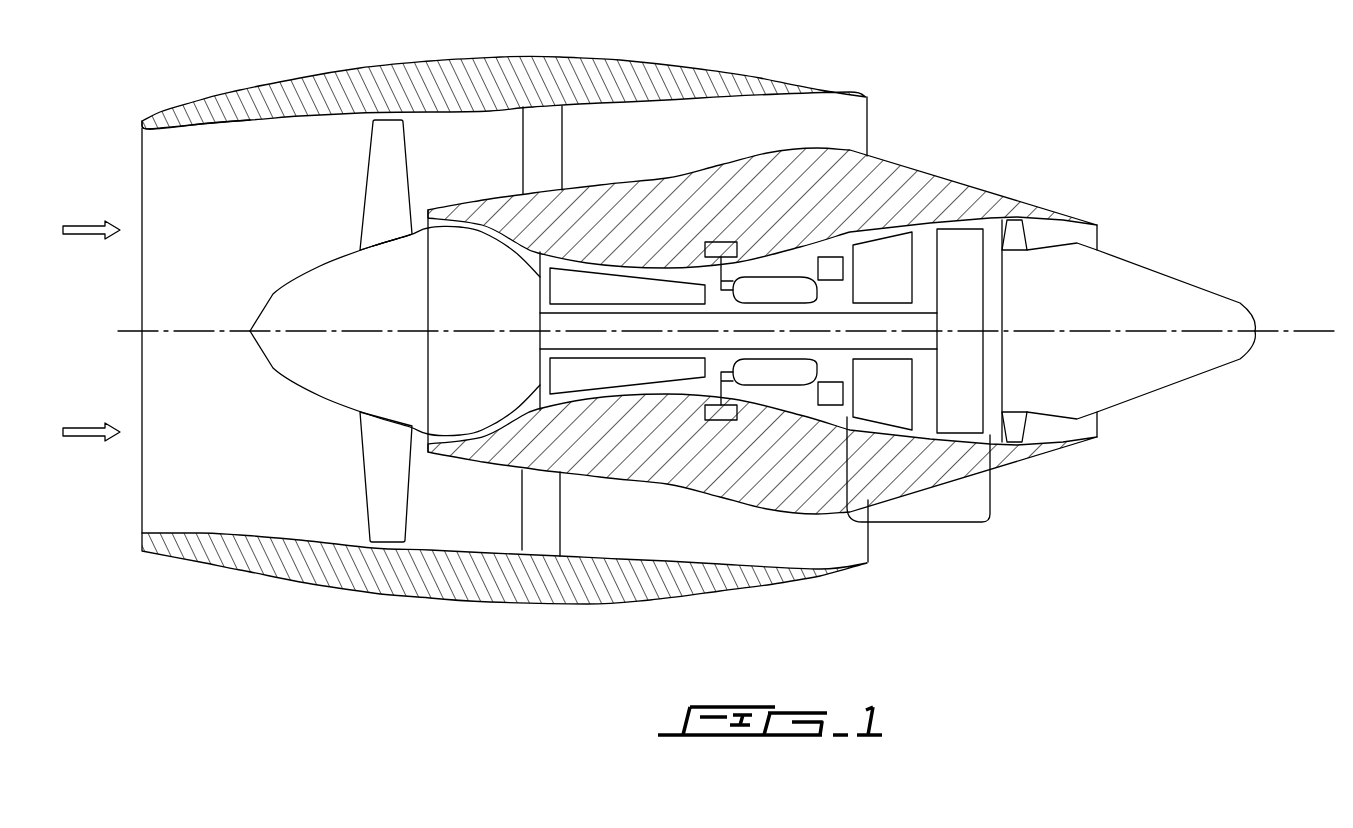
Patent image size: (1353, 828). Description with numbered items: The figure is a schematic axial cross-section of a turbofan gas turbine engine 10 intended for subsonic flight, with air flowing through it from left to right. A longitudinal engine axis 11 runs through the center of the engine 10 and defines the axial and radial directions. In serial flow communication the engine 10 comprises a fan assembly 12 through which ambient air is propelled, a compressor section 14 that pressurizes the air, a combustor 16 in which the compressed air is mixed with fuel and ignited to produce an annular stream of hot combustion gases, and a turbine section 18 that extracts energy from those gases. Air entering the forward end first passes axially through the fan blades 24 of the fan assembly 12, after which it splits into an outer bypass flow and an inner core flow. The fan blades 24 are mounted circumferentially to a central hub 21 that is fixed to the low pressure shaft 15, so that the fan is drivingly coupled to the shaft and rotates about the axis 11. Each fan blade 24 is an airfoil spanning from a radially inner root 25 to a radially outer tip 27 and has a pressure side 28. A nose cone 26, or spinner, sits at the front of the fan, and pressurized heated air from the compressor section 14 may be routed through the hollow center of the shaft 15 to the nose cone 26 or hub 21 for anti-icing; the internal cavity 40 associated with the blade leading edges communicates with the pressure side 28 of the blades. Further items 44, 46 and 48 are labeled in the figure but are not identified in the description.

The gas turbine engine 10 is at (1018, 123).
The longitudinal engine axis 11 is at (1278, 331).
The fan assembly 12 is at (334, 461).
The compressor section 14 is at (618, 285).
The low pressure shaft 15 is at (575, 313).
The combustor 16 is at (765, 280).
The turbine section 18 is at (916, 523).
The central hub 21 is at (340, 290).
The fan blades 24 is at (378, 178).
The radially inner root 25 is at (390, 247).
The nose cone 26 is at (273, 368).
The radially outer tip 27 is at (387, 118).
The pressure side 28 is at (398, 474).
The internal cavity 40 is at (285, 88).
The nacelle inner surface 44 is at (197, 131).
The inlet lip 46 is at (142, 123).
The exhaust nozzle 48 is at (1097, 225).